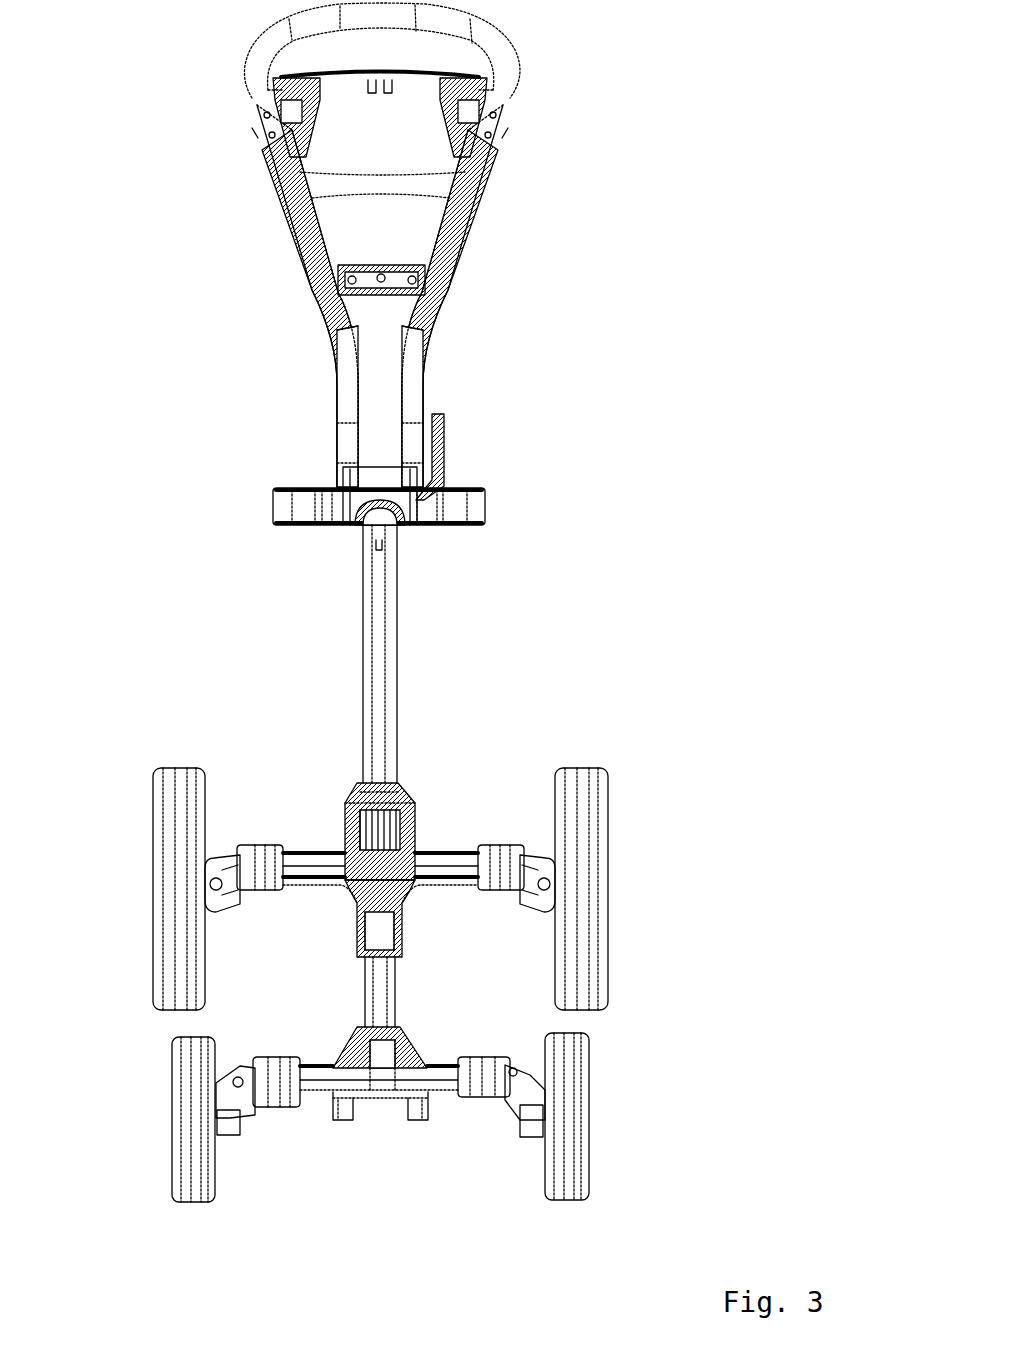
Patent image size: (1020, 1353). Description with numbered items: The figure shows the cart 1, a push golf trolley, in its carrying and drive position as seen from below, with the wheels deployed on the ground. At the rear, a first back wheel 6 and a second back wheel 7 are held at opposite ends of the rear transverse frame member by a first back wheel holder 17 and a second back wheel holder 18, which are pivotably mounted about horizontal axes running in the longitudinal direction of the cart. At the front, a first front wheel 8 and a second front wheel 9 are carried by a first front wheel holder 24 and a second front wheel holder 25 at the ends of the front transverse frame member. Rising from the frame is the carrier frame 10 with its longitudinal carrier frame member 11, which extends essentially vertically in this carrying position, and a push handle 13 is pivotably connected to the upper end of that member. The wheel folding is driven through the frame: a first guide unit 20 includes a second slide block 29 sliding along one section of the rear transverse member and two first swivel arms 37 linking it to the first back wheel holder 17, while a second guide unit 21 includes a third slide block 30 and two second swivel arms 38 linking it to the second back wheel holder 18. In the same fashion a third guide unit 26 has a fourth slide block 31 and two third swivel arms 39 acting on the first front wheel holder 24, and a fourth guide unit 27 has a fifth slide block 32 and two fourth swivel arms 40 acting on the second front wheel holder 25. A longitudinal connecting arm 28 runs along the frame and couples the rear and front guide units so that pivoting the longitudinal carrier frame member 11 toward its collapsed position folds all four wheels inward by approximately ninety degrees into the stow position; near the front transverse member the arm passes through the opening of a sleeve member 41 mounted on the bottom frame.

The cart 1 is at (668, 132).
The first back wheel 6 is at (170, 787).
The second back wheel 7 is at (603, 787).
The first front wheel 8 is at (185, 1183).
The second front wheel 9 is at (578, 1178).
The carrier frame 10 is at (338, 596).
The longitudinal carrier frame member 11 is at (375, 595).
The push handle 13 is at (350, 355).
The first back wheel holder 17 is at (226, 850).
The second back wheel holder 18 is at (530, 860).
The first guide unit 20 is at (308, 828).
The second guide unit 21 is at (494, 828).
The first front wheel holder 24 is at (228, 1125).
The second front wheel holder 25 is at (535, 1125).
The third guide unit 26 is at (291, 1108).
The fourth guide unit 27 is at (448, 1112).
The longitudinal connecting arm 28 is at (383, 1000).
The second slide block 29 is at (258, 850).
The third slide block 30 is at (500, 855).
The fourth slide block 31 is at (280, 1060).
The fifth slide block 32 is at (484, 1068).
The first swivel arms 37 is at (242, 890).
The second swivel arms 38 is at (526, 878).
The third swivel arms 39 is at (252, 1062).
The fourth swivel arms 40 is at (515, 1110).
The sleeve member 41 is at (393, 1050).